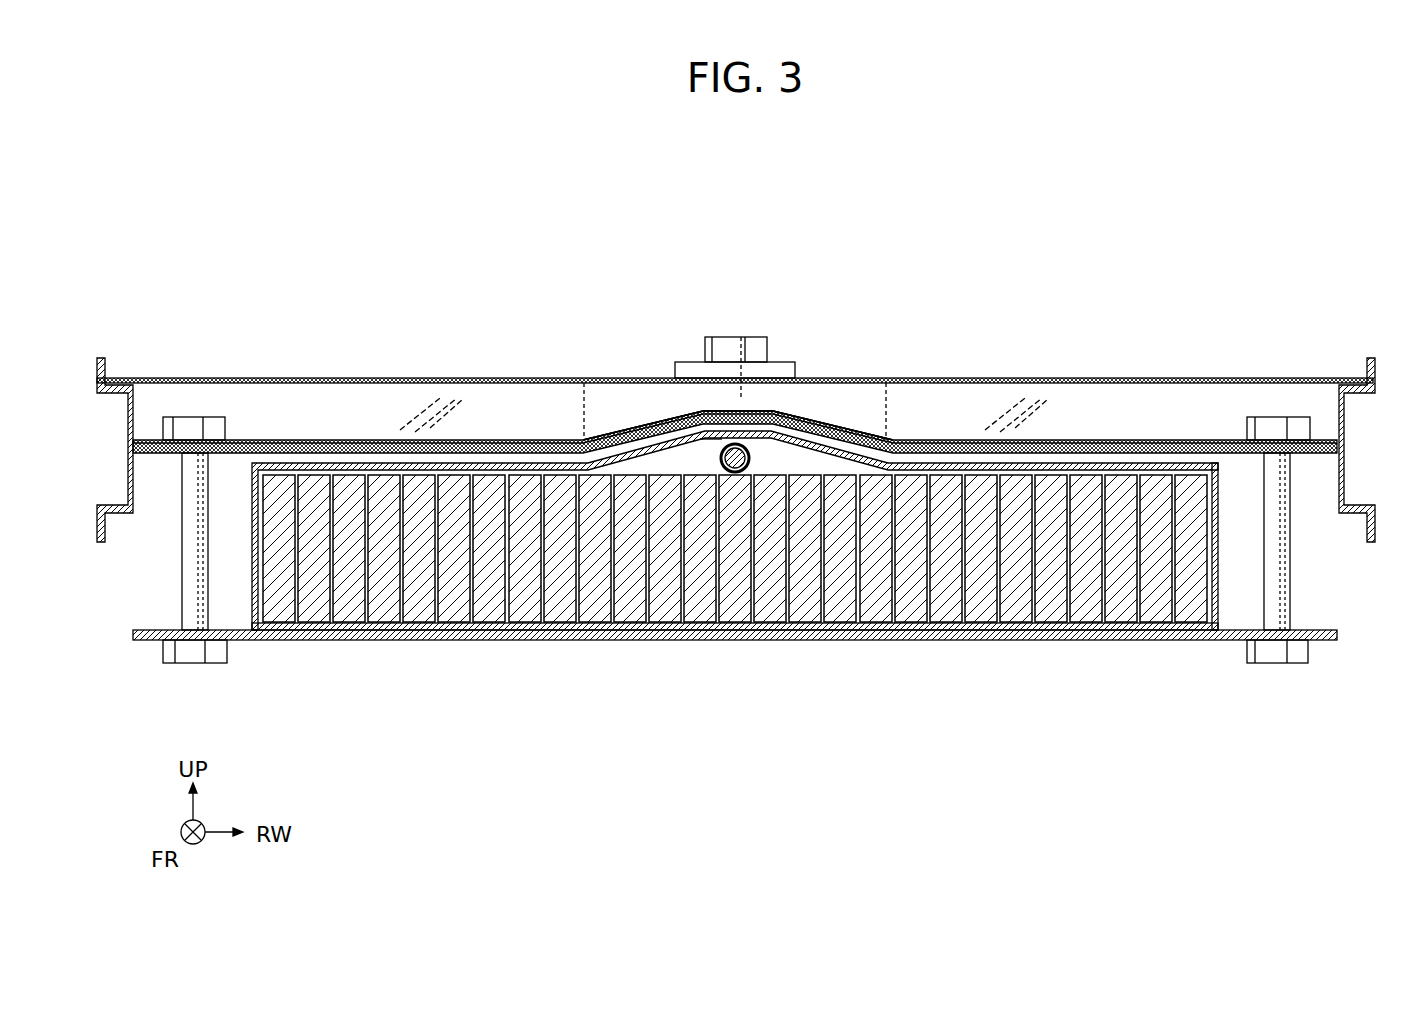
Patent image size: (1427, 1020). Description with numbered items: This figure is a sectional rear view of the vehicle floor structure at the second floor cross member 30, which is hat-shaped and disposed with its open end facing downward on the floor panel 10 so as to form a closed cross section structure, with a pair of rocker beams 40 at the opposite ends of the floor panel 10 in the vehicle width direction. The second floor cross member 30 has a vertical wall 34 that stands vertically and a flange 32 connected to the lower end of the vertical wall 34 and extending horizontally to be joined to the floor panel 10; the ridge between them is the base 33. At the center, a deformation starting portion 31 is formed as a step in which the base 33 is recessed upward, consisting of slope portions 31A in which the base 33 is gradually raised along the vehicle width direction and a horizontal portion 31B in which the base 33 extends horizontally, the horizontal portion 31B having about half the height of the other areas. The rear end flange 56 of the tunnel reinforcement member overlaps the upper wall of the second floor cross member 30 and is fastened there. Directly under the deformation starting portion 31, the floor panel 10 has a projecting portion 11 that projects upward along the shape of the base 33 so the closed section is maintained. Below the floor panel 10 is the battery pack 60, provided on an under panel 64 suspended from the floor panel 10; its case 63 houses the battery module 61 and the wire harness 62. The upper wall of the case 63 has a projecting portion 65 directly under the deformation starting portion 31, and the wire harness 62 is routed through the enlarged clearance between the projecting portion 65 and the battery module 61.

The floor panel 10 is at (235, 453).
The projecting portion 11 is at (633, 428).
The second floor cross member 30 is at (335, 378).
The deformation starting portion 31 is at (627, 208).
The slope portion 31A is at (648, 405).
The horizontal portion 31B is at (741, 398).
The flange 32 is at (293, 442).
The base 33 is at (175, 453).
The vertical wall 34 is at (222, 405).
The rocker beam 40 is at (97, 378).
The rear end flange 56 is at (673, 360).
The battery pack 60 is at (250, 587).
The battery module 61 is at (1205, 600).
The wire harness 62 is at (752, 458).
The case 63 is at (1218, 576).
The under panel 64 is at (1320, 642).
The projecting portion 65 is at (713, 440).